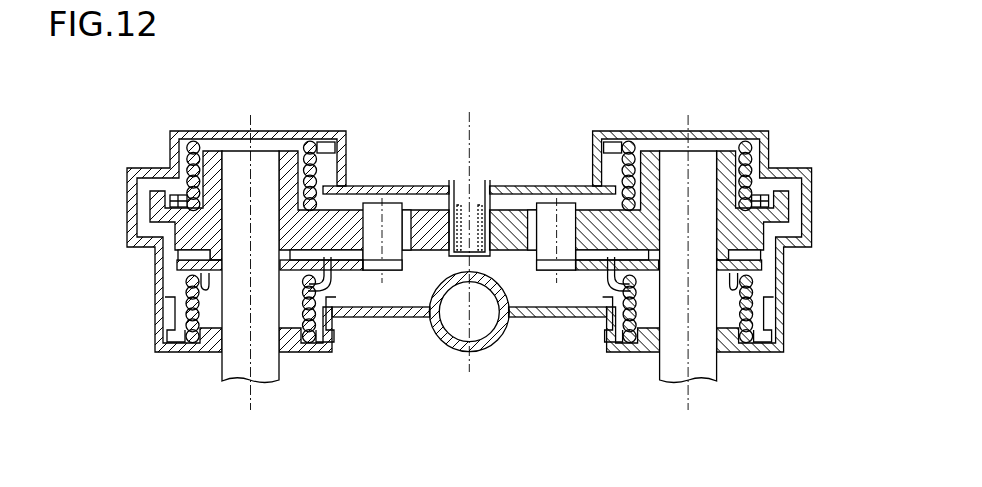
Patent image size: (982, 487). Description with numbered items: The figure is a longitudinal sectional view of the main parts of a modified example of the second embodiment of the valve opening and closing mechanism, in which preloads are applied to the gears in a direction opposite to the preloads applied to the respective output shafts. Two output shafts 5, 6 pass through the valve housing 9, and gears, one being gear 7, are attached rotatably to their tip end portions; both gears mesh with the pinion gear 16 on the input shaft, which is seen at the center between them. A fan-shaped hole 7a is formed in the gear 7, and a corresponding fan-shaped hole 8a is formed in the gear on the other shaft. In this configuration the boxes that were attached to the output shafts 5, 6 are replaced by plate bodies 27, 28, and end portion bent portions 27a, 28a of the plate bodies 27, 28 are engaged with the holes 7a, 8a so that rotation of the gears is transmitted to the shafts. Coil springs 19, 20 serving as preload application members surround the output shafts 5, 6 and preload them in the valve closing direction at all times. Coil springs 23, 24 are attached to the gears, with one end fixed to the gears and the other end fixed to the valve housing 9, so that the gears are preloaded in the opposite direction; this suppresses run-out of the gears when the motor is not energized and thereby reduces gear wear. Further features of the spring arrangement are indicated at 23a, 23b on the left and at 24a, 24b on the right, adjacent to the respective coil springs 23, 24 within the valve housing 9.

The output shaft 5 is at (228, 368).
The output shaft 6 is at (716, 370).
The gear 7 is at (428, 222).
The fan-shaped hole 7a is at (365, 215).
The fan-shaped hole 8a is at (536, 215).
The valve housing 9 is at (131, 170).
The pinion gear 16 is at (480, 190).
The coil spring 19 is at (186, 318).
The coil spring 20 is at (753, 325).
The coil spring 23 is at (188, 141).
The first inner spring 23a is at (318, 142).
The first seal ring 23b is at (170, 202).
The coil spring 24 is at (752, 158).
The second inner spring 24a is at (621, 143).
The second seal ring 24b is at (767, 203).
The plate body 27 is at (177, 266).
The end portion bent portion 27a is at (392, 268).
The plate body 28 is at (762, 267).
The end portion bent portion 28a is at (548, 268).